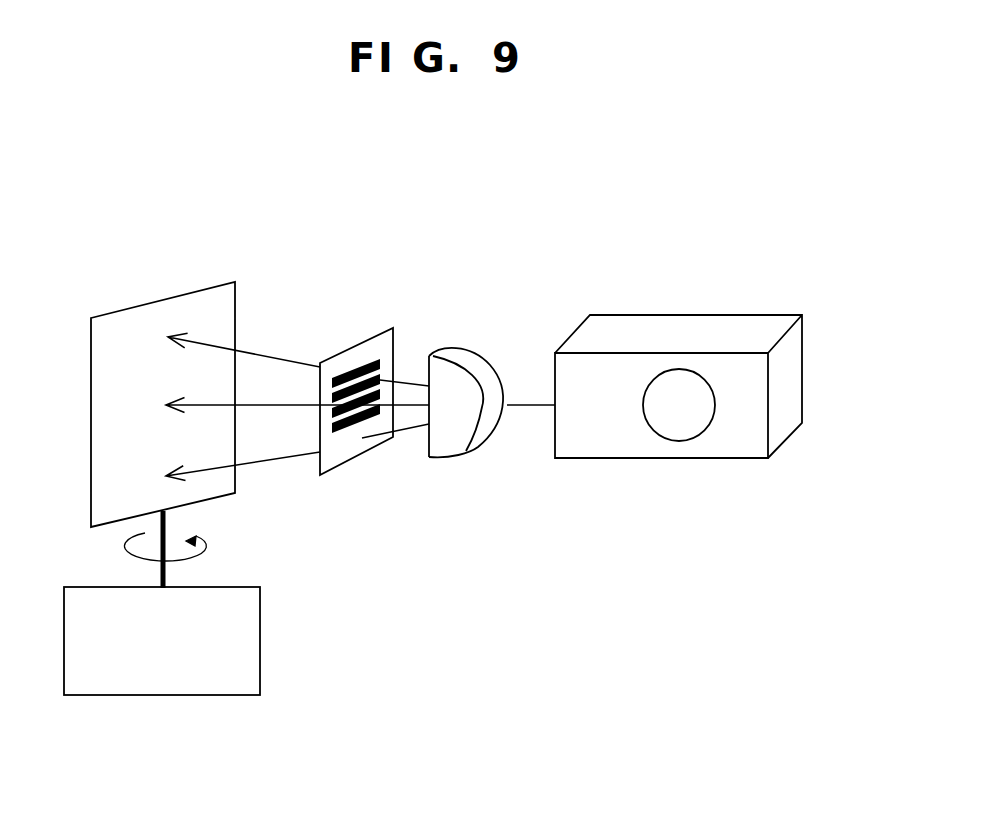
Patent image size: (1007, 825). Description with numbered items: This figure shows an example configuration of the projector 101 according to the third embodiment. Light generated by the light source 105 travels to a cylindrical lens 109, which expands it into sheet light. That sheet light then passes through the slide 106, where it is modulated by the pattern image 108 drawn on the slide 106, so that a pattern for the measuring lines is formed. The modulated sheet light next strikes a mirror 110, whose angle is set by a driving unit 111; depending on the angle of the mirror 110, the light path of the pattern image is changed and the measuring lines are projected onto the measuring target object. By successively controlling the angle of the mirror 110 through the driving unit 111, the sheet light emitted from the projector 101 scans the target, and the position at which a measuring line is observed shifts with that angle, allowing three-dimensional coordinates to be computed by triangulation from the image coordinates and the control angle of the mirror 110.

The projector 101 is at (678, 354).
The light source 105 is at (677, 441).
The slide 106 is at (356, 411).
The pattern image 108 is at (355, 373).
The cylindrical lens 109 is at (467, 456).
The mirror 110 is at (160, 301).
The driving unit 111 is at (261, 641).